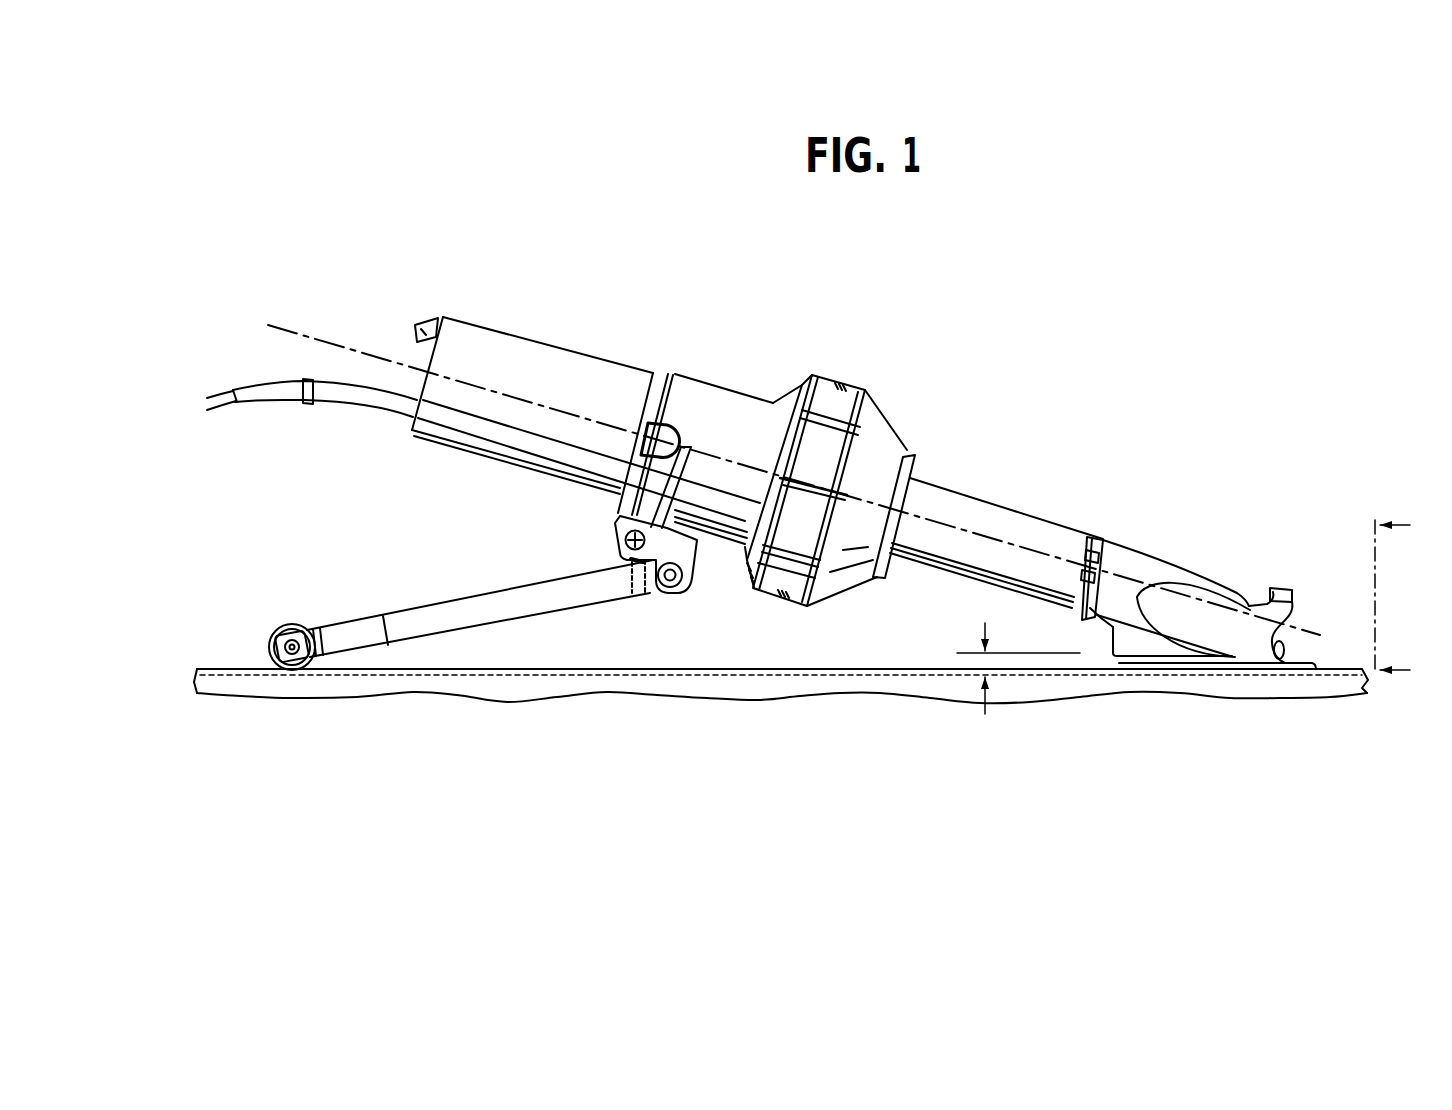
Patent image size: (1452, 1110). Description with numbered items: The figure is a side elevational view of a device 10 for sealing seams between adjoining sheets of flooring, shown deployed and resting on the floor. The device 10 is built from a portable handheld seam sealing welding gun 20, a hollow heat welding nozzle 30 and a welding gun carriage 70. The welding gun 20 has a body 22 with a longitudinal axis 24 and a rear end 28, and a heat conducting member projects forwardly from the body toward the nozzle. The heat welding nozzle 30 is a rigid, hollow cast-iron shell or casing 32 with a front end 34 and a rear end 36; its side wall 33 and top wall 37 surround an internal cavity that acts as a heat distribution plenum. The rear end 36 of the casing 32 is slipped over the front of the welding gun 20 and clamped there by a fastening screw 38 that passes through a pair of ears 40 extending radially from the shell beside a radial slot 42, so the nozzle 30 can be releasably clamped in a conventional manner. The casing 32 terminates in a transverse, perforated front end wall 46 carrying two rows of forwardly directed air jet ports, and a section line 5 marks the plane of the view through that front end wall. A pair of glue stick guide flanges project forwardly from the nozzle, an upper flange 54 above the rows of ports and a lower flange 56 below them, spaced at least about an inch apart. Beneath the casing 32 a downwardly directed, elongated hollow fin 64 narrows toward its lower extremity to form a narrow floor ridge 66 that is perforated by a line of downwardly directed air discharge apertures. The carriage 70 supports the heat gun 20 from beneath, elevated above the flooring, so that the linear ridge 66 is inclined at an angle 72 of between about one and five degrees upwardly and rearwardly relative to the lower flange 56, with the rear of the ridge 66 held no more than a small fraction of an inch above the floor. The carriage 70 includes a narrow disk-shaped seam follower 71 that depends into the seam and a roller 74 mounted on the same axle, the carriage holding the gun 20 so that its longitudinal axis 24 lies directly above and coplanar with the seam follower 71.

The section line 5- 5 is at (1402, 596).
The device 10 is at (668, 303).
The portable handheld seam sealing welding gun 20 is at (900, 410).
The body 22 is at (745, 578).
The longitudinal axis 24 is at (307, 334).
The rear end 28 is at (430, 362).
The heat welding nozzle 30 is at (1162, 532).
The casing 32 is at (1180, 560).
The side wall 33 is at (955, 550).
The front end 34 is at (1258, 587).
The rear end 36 is at (1117, 553).
The top wall 37 is at (980, 508).
The fastening screw 38 is at (1096, 538).
The ears 40 is at (1090, 606).
The radial slot 42 is at (1090, 608).
The front end wall 46 is at (1287, 664).
The upper flange 54 is at (1289, 588).
The lower flange 56 is at (1305, 668).
The fin 64 is at (1133, 648).
The floor ridge 66 is at (1165, 658).
The welding gun carriage 70 is at (431, 590).
The seam follower 71 is at (283, 623).
The angle 72 is at (1018, 683).
The roller 74 is at (268, 647).